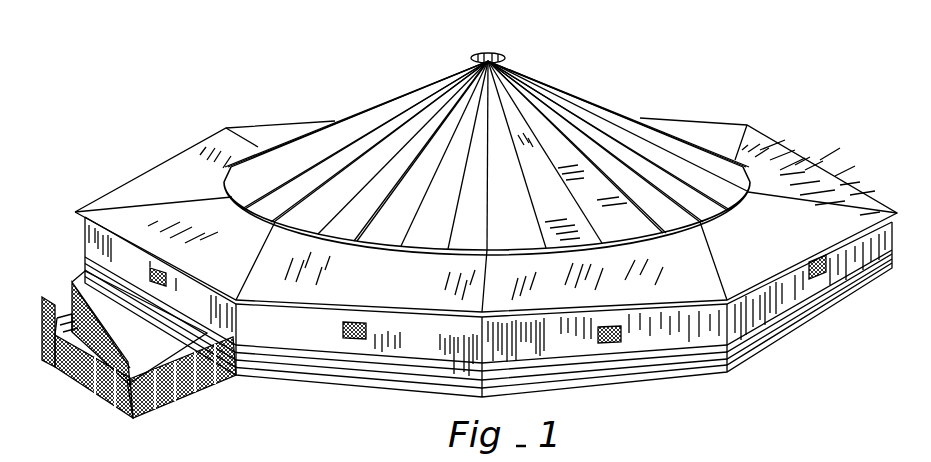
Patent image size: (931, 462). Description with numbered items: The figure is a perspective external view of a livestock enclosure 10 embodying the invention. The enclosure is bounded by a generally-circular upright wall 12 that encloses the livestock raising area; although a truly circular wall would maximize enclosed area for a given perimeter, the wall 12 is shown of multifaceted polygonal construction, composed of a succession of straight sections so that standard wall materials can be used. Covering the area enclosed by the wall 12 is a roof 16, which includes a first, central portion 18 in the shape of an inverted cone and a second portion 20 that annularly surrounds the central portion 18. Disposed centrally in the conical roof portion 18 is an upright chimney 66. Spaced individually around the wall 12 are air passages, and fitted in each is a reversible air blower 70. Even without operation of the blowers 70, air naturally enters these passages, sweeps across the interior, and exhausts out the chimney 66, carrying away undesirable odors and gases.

The livestock enclosure 10 is at (684, 82).
The upright wall 12 is at (85, 250).
The roof 16 is at (790, 175).
The first central portion 18 is at (590, 100).
The second portion 20 is at (817, 185).
The chimney 66 is at (491, 59).
The reversible air blower 70 is at (166, 275).